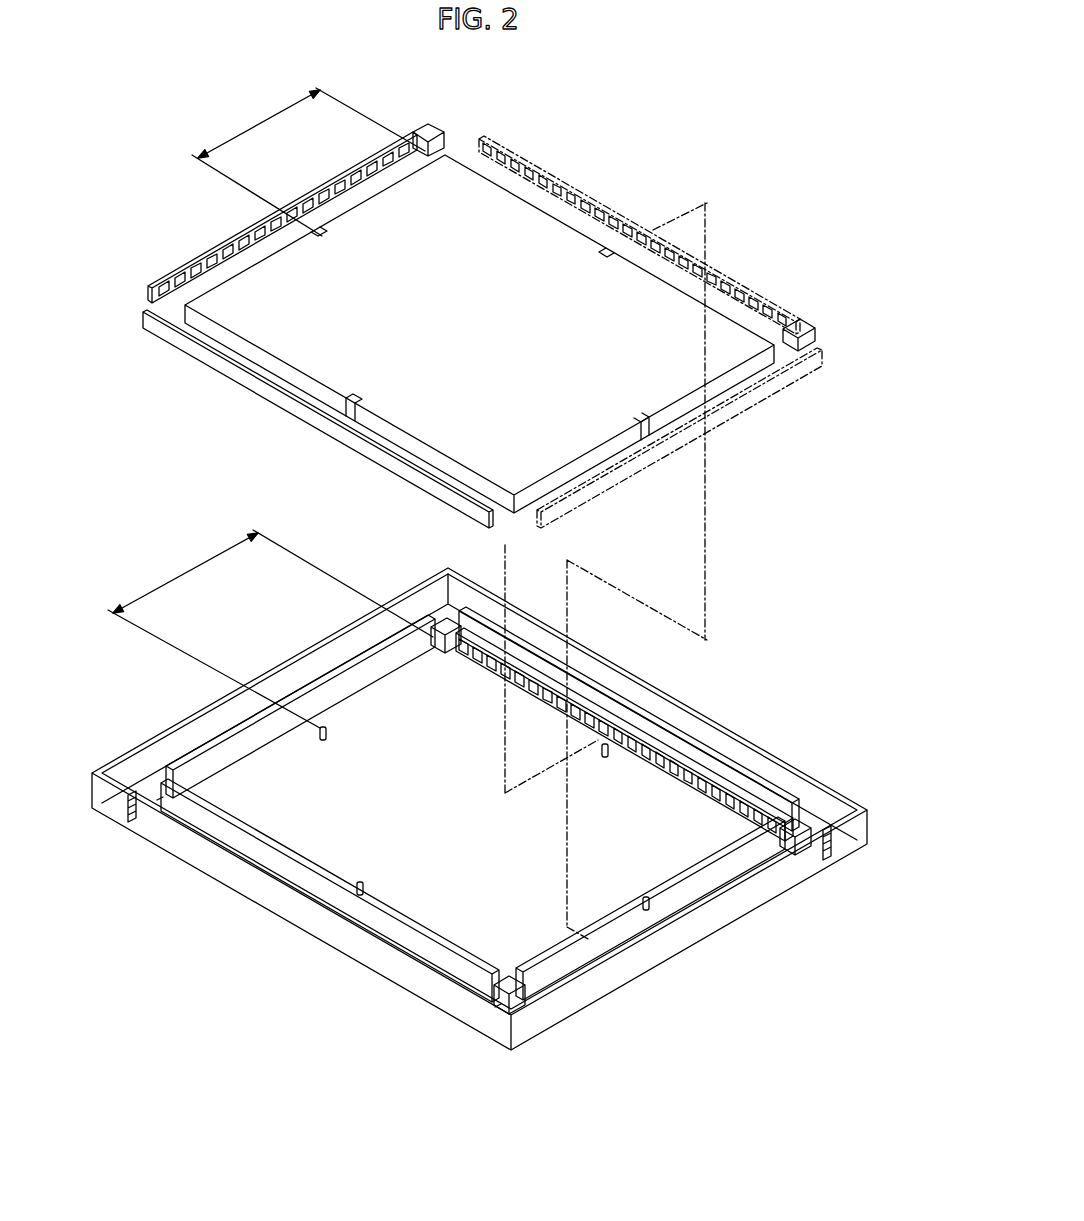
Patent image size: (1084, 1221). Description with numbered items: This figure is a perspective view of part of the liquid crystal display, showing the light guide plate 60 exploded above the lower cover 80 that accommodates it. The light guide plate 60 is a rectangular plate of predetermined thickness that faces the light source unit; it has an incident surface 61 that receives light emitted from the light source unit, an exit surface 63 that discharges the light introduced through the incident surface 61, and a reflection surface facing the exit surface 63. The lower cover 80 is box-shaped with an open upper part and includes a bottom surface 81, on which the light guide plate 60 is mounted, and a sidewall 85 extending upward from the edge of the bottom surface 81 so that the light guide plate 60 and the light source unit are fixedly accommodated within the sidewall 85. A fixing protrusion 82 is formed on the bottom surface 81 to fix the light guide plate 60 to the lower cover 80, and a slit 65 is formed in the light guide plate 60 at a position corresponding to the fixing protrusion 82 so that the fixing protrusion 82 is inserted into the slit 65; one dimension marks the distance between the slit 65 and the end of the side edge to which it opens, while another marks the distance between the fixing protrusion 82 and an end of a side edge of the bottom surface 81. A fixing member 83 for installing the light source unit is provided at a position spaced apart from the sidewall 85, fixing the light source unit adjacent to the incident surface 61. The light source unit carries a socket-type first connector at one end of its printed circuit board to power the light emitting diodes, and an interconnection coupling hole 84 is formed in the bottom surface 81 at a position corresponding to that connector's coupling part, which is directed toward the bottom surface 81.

The light guide plate 60 is at (740, 320).
The incident surface 61 is at (407, 440).
The exit surface 63 is at (505, 205).
The slit 65 is at (328, 240).
The lower cover 80 is at (256, 678).
The bottom surface 81 is at (435, 915).
The fixing protrusion 82 is at (328, 738).
The fixing member 83 is at (237, 722).
The interconnection coupling hole 84 is at (447, 643).
The sidewall 85 is at (312, 668).